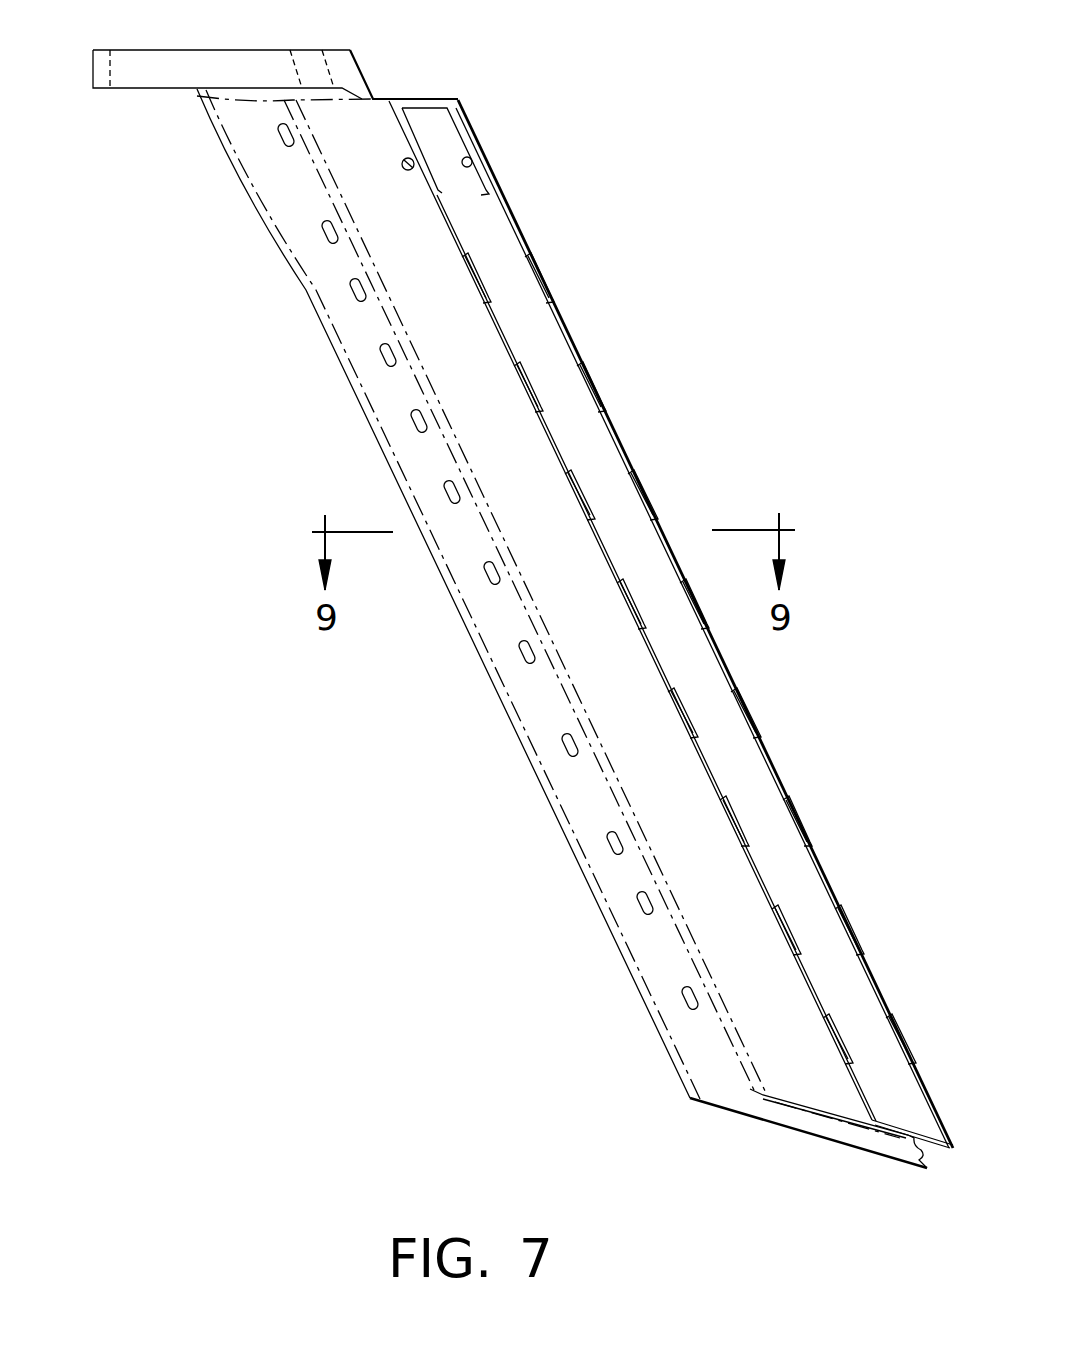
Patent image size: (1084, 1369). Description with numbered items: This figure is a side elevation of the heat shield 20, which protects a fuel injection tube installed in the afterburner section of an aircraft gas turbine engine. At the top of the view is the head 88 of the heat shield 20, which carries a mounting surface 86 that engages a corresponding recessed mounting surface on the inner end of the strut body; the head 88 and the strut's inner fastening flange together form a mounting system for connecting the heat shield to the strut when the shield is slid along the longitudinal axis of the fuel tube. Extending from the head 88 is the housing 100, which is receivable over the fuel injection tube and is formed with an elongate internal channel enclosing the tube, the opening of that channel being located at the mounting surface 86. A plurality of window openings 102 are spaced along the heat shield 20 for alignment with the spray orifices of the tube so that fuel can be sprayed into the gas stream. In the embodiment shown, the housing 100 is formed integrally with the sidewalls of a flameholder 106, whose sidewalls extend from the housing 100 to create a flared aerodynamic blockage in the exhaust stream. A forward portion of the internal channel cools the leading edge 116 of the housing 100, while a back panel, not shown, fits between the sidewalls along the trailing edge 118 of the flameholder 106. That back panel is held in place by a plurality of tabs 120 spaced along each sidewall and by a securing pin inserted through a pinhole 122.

The heat shield 20 is at (347, 377).
The mounting surface 86 is at (278, 50).
The head 88 is at (84, 62).
The housing 100 is at (378, 440).
The window openings 102 is at (565, 745).
The flameholder 106 is at (612, 420).
The leading edge 116 is at (548, 807).
The trailing edge 118 is at (772, 763).
The tabs 120 is at (530, 377).
The pinhole 122 is at (409, 171).